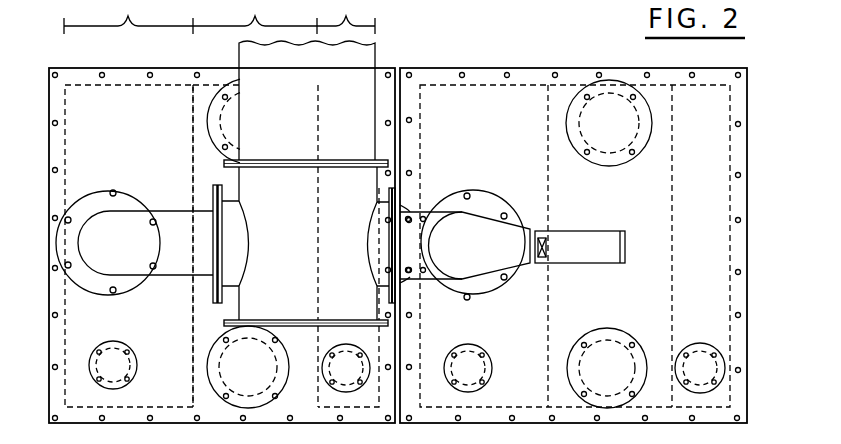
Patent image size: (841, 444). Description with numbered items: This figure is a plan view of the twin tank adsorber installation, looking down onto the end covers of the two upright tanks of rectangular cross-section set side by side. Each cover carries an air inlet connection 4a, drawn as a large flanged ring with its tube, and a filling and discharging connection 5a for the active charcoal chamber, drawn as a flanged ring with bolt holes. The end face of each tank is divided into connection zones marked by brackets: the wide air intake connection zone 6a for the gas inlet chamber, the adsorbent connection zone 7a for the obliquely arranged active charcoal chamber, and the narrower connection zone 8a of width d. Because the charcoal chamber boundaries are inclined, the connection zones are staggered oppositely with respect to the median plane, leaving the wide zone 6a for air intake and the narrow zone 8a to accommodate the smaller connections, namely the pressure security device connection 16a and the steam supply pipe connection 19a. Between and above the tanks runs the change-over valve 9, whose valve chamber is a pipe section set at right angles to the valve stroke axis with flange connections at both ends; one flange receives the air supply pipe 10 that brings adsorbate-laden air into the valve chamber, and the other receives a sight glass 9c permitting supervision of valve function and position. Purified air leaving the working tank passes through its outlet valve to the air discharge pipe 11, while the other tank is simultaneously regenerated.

The air inlet connection 4a is at (102, 193).
The filling and discharging connection 5a is at (222, 123).
The air intake connection zone 6a is at (128, 203).
The adsorbent connection zone 7a is at (255, 203).
The narrow outlet-side connection zone 8a is at (348, 203).
The change-over valve 9 is at (248, 303).
The sight glass 9c is at (347, 320).
The air supply pipe 10 is at (367, 58).
The air discharge pipe 11 is at (573, 211).
The pressure security device connection 16a is at (107, 343).
The steam supply pipe connection 19a is at (332, 376).